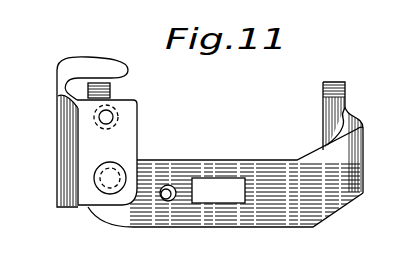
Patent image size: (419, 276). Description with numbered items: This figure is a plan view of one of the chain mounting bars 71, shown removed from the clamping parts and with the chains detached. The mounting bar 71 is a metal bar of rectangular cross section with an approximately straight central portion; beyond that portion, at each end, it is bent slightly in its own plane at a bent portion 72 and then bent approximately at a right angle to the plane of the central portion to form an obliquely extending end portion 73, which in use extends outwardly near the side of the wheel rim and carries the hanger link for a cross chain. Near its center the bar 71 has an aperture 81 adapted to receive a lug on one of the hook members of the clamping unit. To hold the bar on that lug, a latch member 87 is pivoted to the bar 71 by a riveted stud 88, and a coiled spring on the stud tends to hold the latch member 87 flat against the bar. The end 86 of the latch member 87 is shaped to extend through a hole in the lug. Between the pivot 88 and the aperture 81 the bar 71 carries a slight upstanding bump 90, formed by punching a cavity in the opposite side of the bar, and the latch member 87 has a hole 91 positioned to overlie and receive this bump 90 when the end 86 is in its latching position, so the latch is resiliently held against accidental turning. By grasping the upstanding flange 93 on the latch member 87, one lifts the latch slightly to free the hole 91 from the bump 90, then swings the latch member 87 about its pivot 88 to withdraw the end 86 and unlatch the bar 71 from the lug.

The mounting bar 71 is at (252, 226).
The slightly bent portion 72 is at (318, 157).
The obliquely extending end portion 73 is at (348, 101).
The aperture 81 is at (213, 193).
The end of latch member 86 is at (101, 60).
The latch member 87 is at (134, 140).
The riveted stud 88 is at (110, 183).
The upstanding projection or bump 90 is at (165, 202).
The hole in latch member 91 is at (112, 110).
The upstanding flange 93 is at (67, 148).